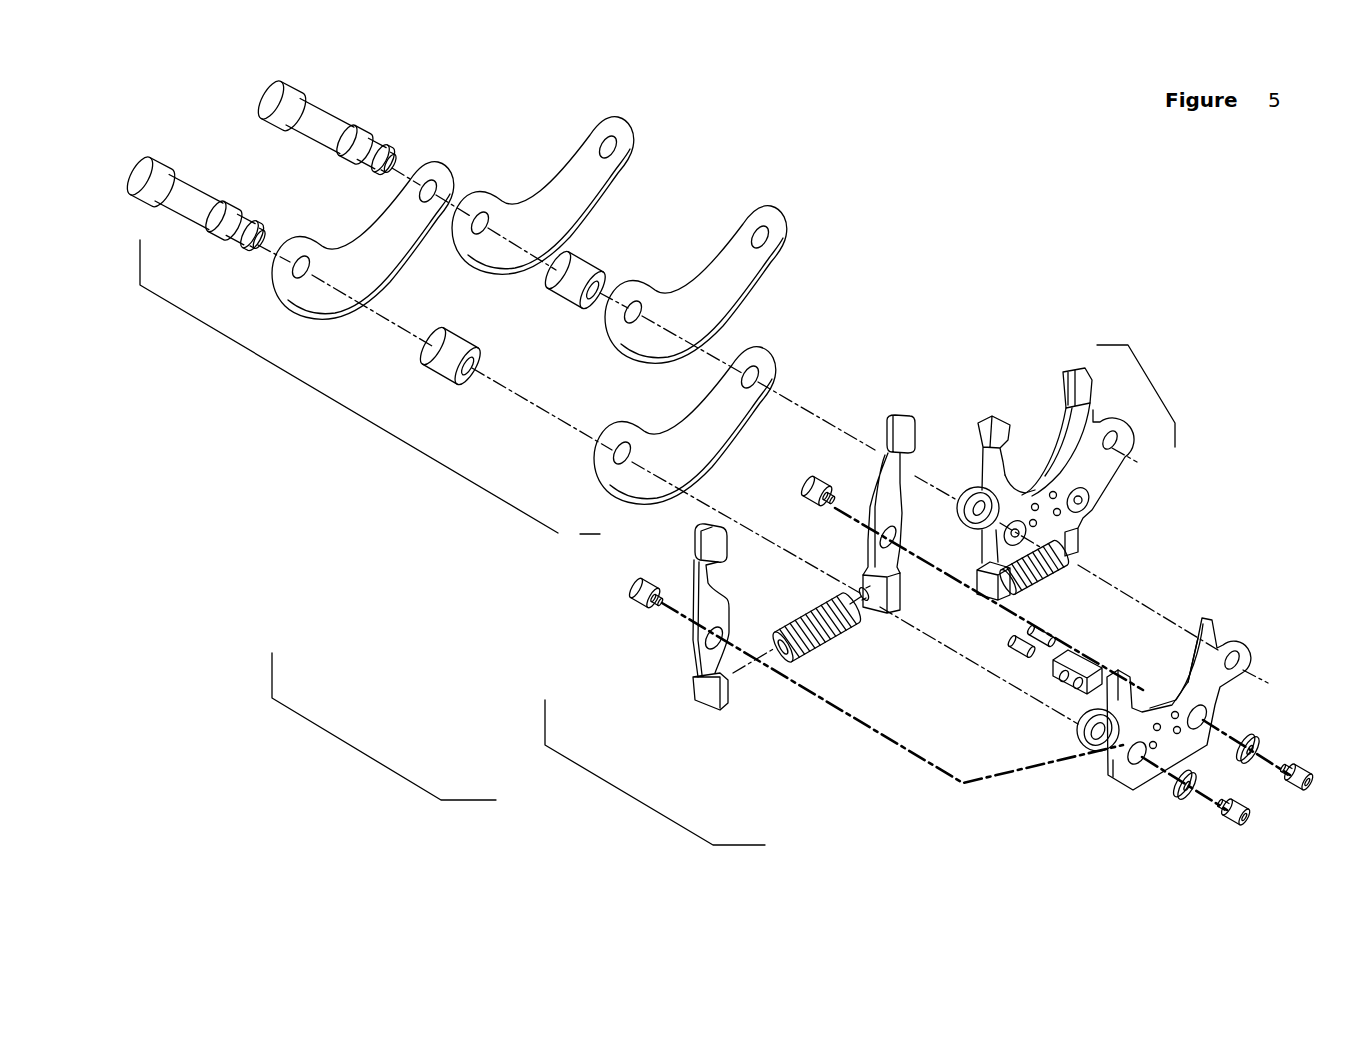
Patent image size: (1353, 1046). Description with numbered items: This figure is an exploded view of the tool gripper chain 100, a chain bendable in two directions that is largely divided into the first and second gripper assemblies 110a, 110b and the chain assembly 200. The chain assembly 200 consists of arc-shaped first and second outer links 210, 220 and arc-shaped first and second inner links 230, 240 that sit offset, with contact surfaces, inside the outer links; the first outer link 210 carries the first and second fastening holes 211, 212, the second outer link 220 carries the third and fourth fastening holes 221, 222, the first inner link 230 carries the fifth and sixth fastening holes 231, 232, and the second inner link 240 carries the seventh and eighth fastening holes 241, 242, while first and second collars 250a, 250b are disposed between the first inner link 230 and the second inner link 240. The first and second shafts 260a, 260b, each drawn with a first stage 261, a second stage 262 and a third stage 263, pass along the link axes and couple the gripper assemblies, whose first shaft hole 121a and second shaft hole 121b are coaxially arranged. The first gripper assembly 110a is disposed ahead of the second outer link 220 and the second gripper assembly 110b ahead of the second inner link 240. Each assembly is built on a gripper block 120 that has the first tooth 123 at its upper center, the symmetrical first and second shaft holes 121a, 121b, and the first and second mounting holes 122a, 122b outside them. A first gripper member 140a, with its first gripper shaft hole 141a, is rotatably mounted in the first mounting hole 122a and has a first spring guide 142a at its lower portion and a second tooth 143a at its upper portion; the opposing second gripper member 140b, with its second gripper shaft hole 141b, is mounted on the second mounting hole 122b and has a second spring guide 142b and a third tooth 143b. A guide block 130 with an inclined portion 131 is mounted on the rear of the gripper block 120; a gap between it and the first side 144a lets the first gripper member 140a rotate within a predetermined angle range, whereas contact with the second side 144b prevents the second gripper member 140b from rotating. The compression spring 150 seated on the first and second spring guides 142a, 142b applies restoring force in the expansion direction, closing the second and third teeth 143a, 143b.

The tool gripper chain 100 is at (352, 752).
The first gripper assembly 110a is at (627, 795).
The second gripper assembly 110b is at (1150, 387).
The gripper block 120 is at (1180, 705).
The first shaft hole 121a is at (1135, 768).
The second shaft hole 121b is at (1205, 718).
The first mounting hole 122a is at (965, 492).
The second mounting hole 122b is at (1114, 448).
The first tooth 123 is at (1153, 697).
The guide block 130 is at (1083, 629).
The inclined portion 131 is at (1063, 668).
The first gripper member 140a is at (686, 596).
The second gripper member 140b is at (932, 494).
The first gripper shaft hole 141a is at (712, 645).
The second gripper shaft hole 141b is at (893, 547).
The first spring guide 142a is at (729, 683).
The second spring guide 142b is at (880, 613).
The second tooth 143a is at (724, 550).
The third tooth 143b is at (886, 425).
The first side 144a is at (730, 613).
The second side 144b is at (868, 528).
The compression spring 150 is at (816, 642).
The chain assembly 200 is at (346, 408).
The first outer link 210 is at (401, 283).
The first fastening hole 211 is at (296, 275).
The second fastening hole 212 is at (433, 185).
The second outer link 220 is at (688, 422).
The third fastening hole 221 is at (615, 458).
The fourth fastening hole 222 is at (755, 378).
The first inner link 230 is at (553, 186).
The fifth fastening hole 231 is at (483, 230).
The sixth fastening hole 232 is at (613, 147).
The second inner link 240 is at (703, 272).
The seventh fastening hole 241 is at (629, 318).
The eighth fastening hole 242 is at (766, 236).
The first collar 250a is at (430, 362).
The second collar 250b is at (562, 290).
The first shaft 260a is at (277, 164).
The second shaft 260b is at (288, 78).
The first stage 261 is at (190, 190).
The second stage 262 is at (228, 214).
The third stage 263 is at (250, 230).